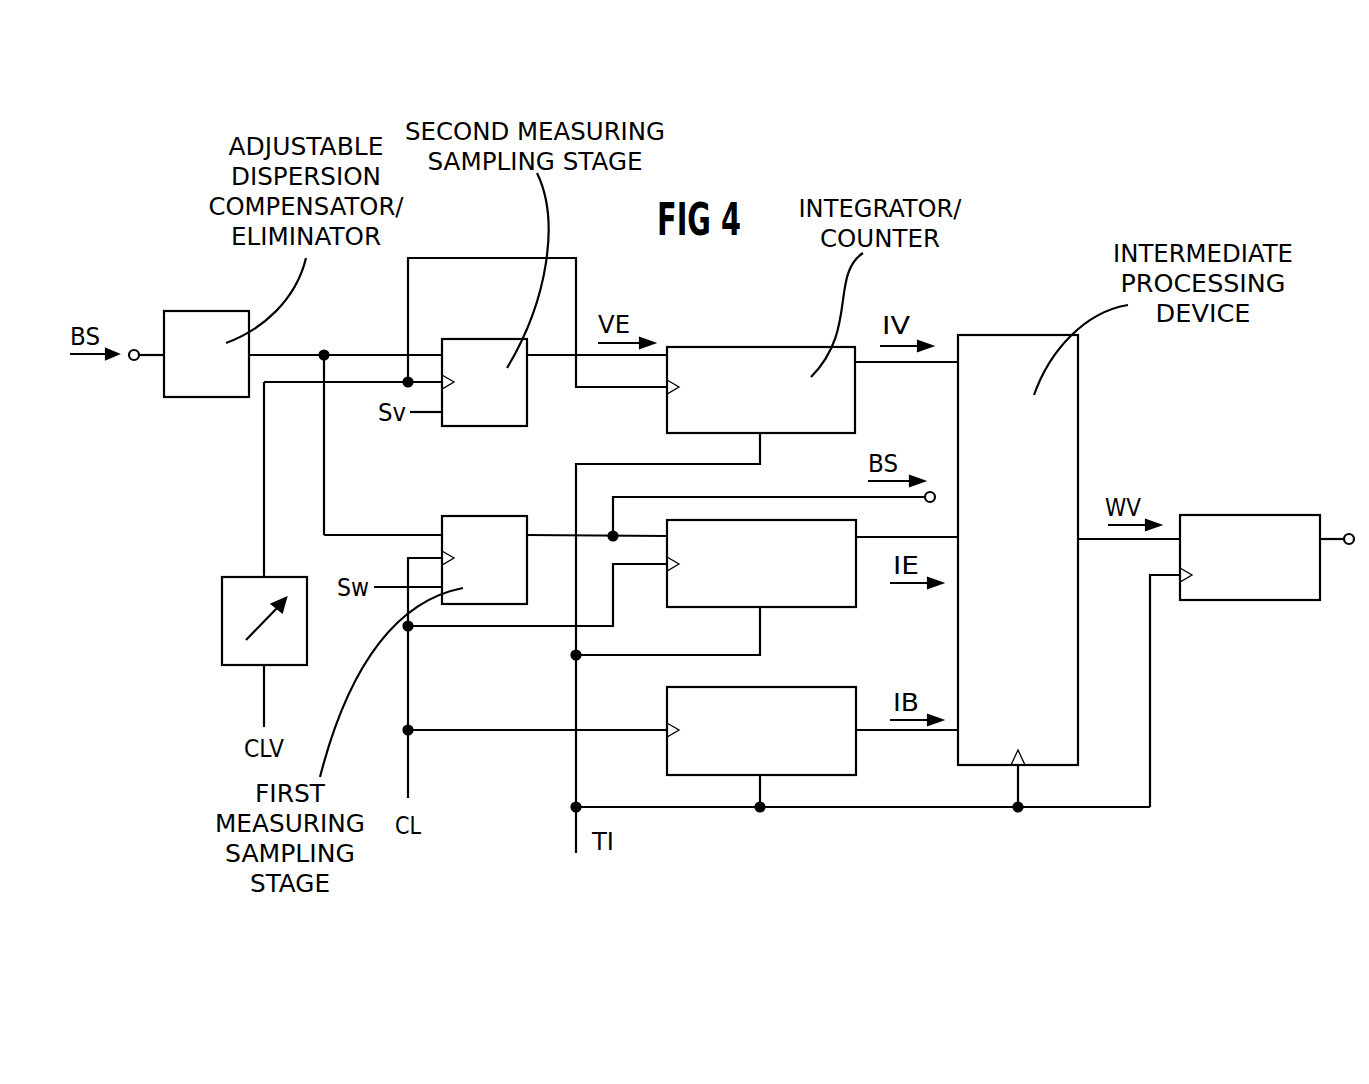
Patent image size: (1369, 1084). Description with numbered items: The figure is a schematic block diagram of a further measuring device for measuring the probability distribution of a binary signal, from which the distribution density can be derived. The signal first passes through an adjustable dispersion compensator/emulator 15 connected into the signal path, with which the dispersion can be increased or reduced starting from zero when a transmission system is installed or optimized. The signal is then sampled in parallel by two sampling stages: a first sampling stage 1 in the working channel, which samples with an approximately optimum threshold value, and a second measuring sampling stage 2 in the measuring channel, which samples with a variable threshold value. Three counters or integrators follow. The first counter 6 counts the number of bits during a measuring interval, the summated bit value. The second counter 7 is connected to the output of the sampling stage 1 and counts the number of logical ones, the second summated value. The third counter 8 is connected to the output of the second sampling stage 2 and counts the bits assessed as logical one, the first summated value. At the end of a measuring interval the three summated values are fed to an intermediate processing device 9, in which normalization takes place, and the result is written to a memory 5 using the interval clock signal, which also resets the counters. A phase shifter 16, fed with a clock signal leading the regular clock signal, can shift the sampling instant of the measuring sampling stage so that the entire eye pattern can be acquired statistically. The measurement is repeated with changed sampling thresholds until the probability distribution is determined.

The first sampling stage 1 is at (500, 516).
The second measuring sampling stage 2 is at (492, 339).
The memory 5 is at (1264, 515).
The first counter 6 is at (827, 687).
The second counter 7 is at (807, 520).
The third counter 8 is at (793, 347).
The intermediate processing device 9 is at (1033, 335).
The adjustable dispersion compensator/emulator 15 is at (214, 311).
The phase shifter 16 is at (222, 605).